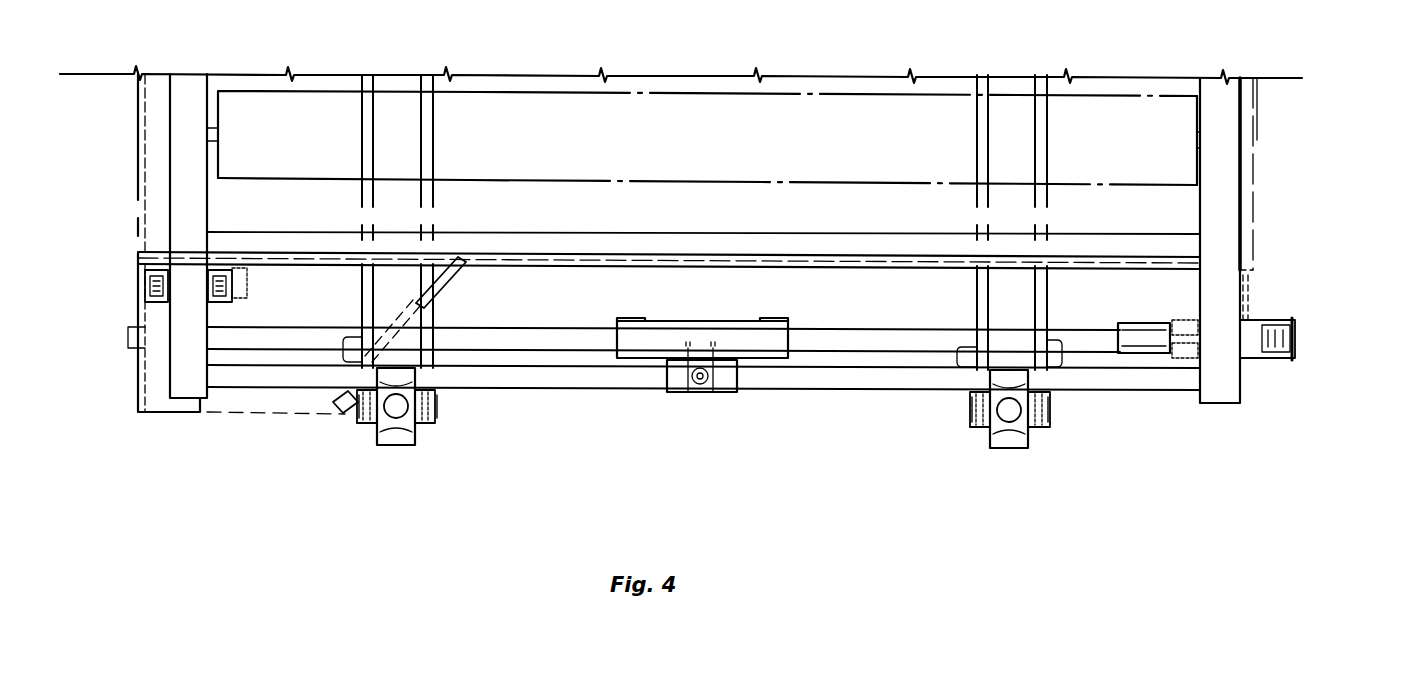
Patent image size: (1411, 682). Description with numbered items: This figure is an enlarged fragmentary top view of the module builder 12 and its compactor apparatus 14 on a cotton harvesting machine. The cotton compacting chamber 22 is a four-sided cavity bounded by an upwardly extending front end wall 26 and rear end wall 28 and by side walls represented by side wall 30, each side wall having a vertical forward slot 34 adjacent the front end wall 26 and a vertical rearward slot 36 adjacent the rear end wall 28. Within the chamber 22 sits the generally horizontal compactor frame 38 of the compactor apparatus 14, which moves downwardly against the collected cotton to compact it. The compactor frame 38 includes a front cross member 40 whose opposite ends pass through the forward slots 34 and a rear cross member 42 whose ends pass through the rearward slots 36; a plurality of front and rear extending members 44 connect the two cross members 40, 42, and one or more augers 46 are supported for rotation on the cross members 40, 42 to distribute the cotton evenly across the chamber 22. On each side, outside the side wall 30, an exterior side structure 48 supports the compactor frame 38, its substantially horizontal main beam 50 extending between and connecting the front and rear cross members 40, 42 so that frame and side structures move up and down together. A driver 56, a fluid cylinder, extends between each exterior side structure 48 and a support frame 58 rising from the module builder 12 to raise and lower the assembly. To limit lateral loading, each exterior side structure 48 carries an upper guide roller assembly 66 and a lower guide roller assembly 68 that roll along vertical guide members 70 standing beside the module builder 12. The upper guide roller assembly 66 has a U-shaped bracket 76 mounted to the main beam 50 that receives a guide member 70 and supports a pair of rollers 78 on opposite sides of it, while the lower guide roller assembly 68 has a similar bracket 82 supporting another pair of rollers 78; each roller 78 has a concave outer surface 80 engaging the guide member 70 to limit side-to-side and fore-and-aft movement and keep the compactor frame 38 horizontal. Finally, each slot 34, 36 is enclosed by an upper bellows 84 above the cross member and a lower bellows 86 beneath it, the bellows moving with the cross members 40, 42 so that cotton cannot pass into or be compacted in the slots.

The cotton module builder 12 is at (137, 414).
The compactor apparatus 14 is at (1241, 405).
The cotton compacting chamber 22 is at (815, 210).
The front end wall 26 is at (140, 136).
The rear end wall 28 is at (1258, 108).
The side wall 30 is at (868, 332).
The vertical forward slot 34 is at (172, 302).
The vertical rearward slot 36 is at (1240, 356).
The compactor frame 38 is at (1245, 287).
The front cross member 40 is at (185, 414).
The rear cross member 42 is at (1205, 405).
The front and rear extending members 44 is at (932, 258).
The auger 46 is at (1170, 93).
The exterior side structure 48 is at (578, 393).
The main beam 50 is at (638, 393).
The driver 56 is at (700, 393).
The support frame 58 is at (700, 320).
The upper guide roller assembly 66 is at (420, 450).
The lower guide roller assembly 68 is at (438, 425).
The vertical guide member 70 is at (372, 427).
The bracket 76 is at (440, 382).
The roller 78 is at (348, 398).
The concave outer surface 80 is at (357, 412).
The bracket 82 is at (366, 418).
The upper bellows 84 is at (145, 298).
The lower bellows 86 is at (145, 298).